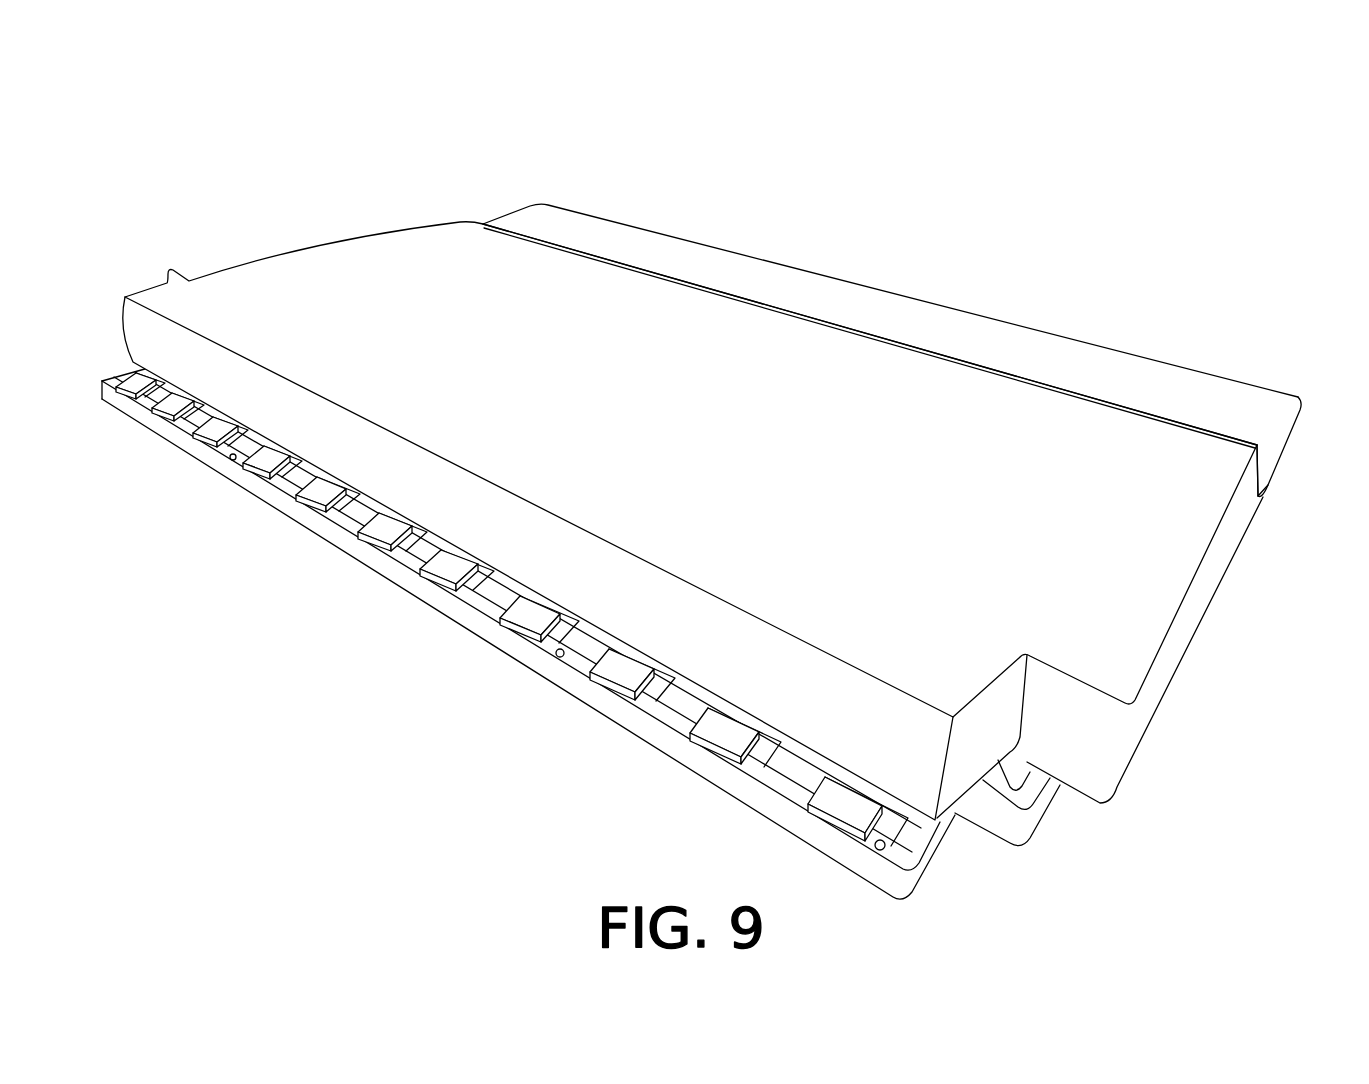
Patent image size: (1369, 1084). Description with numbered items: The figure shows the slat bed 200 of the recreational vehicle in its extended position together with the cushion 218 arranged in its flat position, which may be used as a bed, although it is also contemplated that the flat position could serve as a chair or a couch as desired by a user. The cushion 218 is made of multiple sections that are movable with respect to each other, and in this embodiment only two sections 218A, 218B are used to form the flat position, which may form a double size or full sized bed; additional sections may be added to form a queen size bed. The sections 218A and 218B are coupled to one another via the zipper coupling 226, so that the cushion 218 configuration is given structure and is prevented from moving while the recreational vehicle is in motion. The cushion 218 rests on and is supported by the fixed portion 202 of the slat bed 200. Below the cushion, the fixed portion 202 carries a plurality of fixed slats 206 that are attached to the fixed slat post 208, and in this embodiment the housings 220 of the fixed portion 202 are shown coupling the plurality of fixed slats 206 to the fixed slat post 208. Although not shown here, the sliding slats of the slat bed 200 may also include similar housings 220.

The slat bed 200 is at (143, 128).
The fixed portion 202 is at (501, 633).
The fixed slats 206 is at (140, 390).
The fixed slat post 208 is at (220, 465).
The cushion 218 is at (725, 481).
The first cushion section 218A is at (235, 272).
The second cushion section 218B is at (575, 225).
The housings 220 is at (383, 522).
The zipper coupling 226 is at (1258, 452).